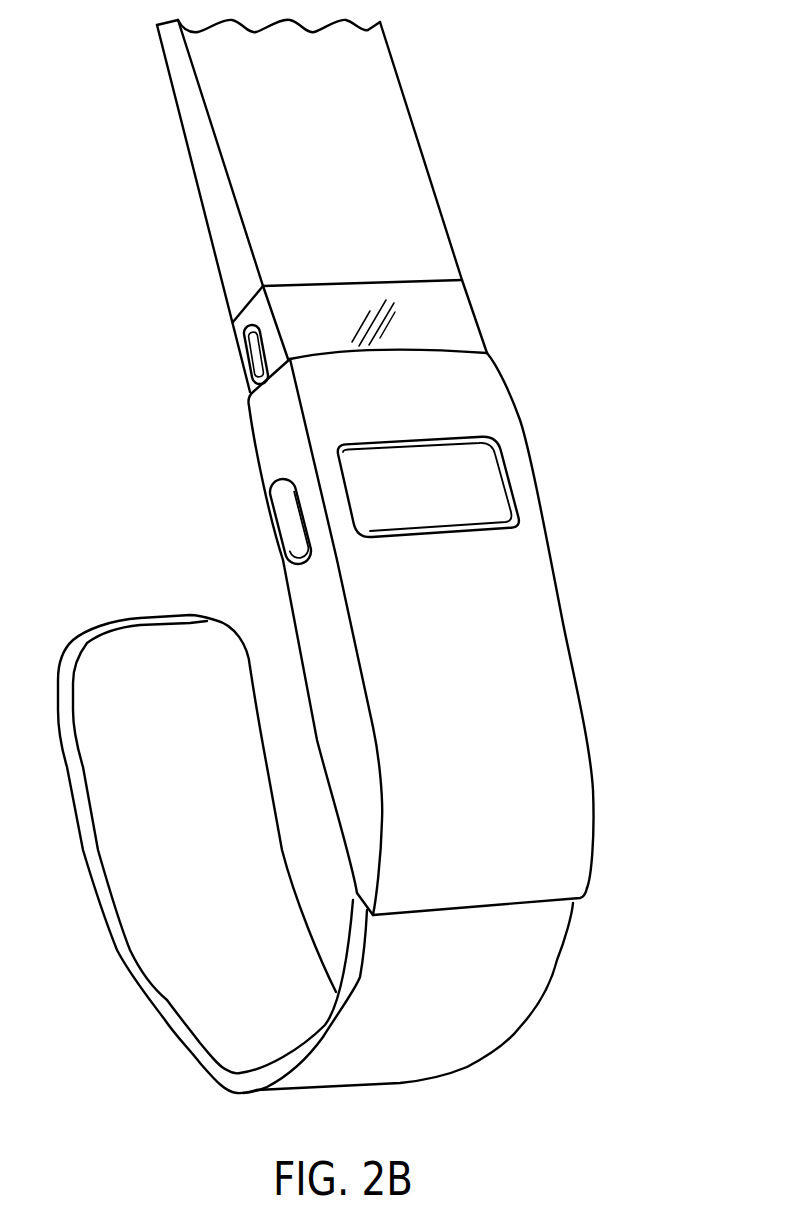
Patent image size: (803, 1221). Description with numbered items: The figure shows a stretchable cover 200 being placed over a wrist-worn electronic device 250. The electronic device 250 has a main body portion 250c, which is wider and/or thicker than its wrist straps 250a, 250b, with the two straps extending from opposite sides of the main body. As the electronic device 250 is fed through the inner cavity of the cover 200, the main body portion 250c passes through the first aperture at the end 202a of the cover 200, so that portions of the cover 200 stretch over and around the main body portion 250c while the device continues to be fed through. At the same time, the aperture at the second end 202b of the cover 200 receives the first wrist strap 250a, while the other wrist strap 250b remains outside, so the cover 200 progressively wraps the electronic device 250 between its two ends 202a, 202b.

The cover 200 is at (608, 567).
The end of cover 202a is at (533, 369).
The second end of cover 202b is at (596, 895).
The electronic device 250 is at (471, 145).
The first wrist strap 250a is at (502, 1012).
The wrist strap 250b is at (414, 111).
The main body portion 250c is at (477, 297).